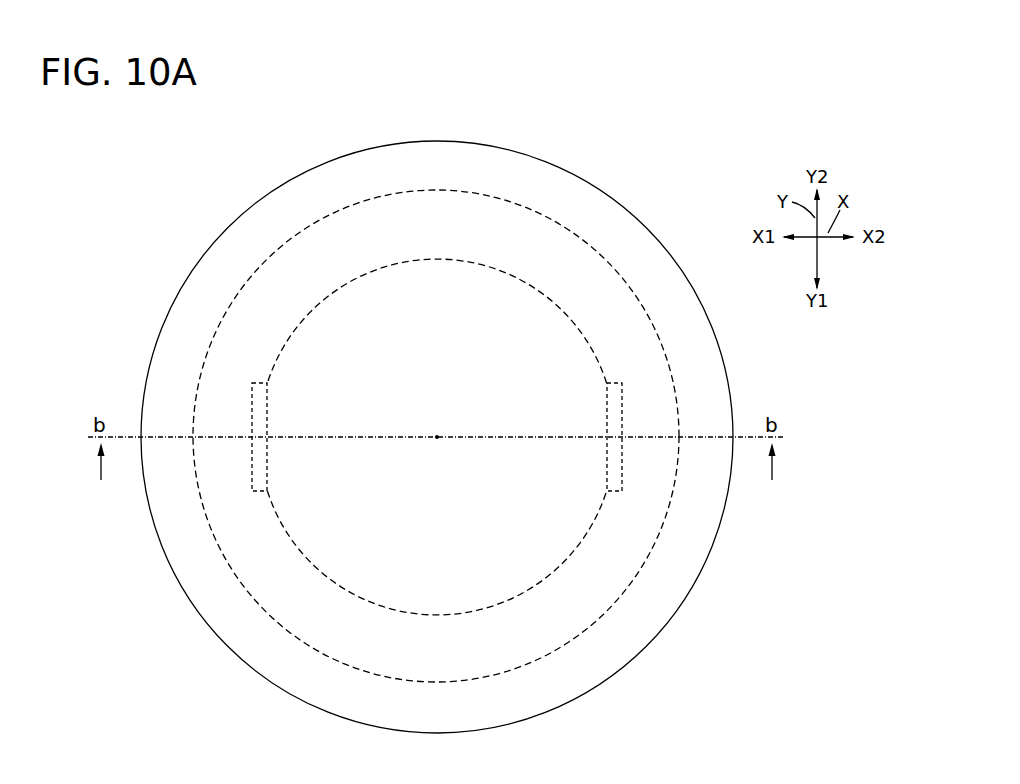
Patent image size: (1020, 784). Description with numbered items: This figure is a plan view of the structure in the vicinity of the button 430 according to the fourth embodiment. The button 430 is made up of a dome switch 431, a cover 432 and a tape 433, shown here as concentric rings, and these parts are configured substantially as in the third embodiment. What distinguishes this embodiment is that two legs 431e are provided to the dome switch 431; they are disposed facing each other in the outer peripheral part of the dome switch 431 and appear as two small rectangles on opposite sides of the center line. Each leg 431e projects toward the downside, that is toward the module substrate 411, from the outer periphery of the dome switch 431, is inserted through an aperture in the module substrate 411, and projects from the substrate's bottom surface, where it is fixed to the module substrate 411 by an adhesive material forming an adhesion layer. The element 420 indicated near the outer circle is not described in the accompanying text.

The module substrate 411 is at (155, 240).
The polishing head 420 is at (672, 158).
The button 430 is at (178, 176).
The dome switch 431 is at (590, 532).
The leg 431e is at (252, 472).
The cover 432 is at (623, 597).
The tape 433 is at (630, 663).